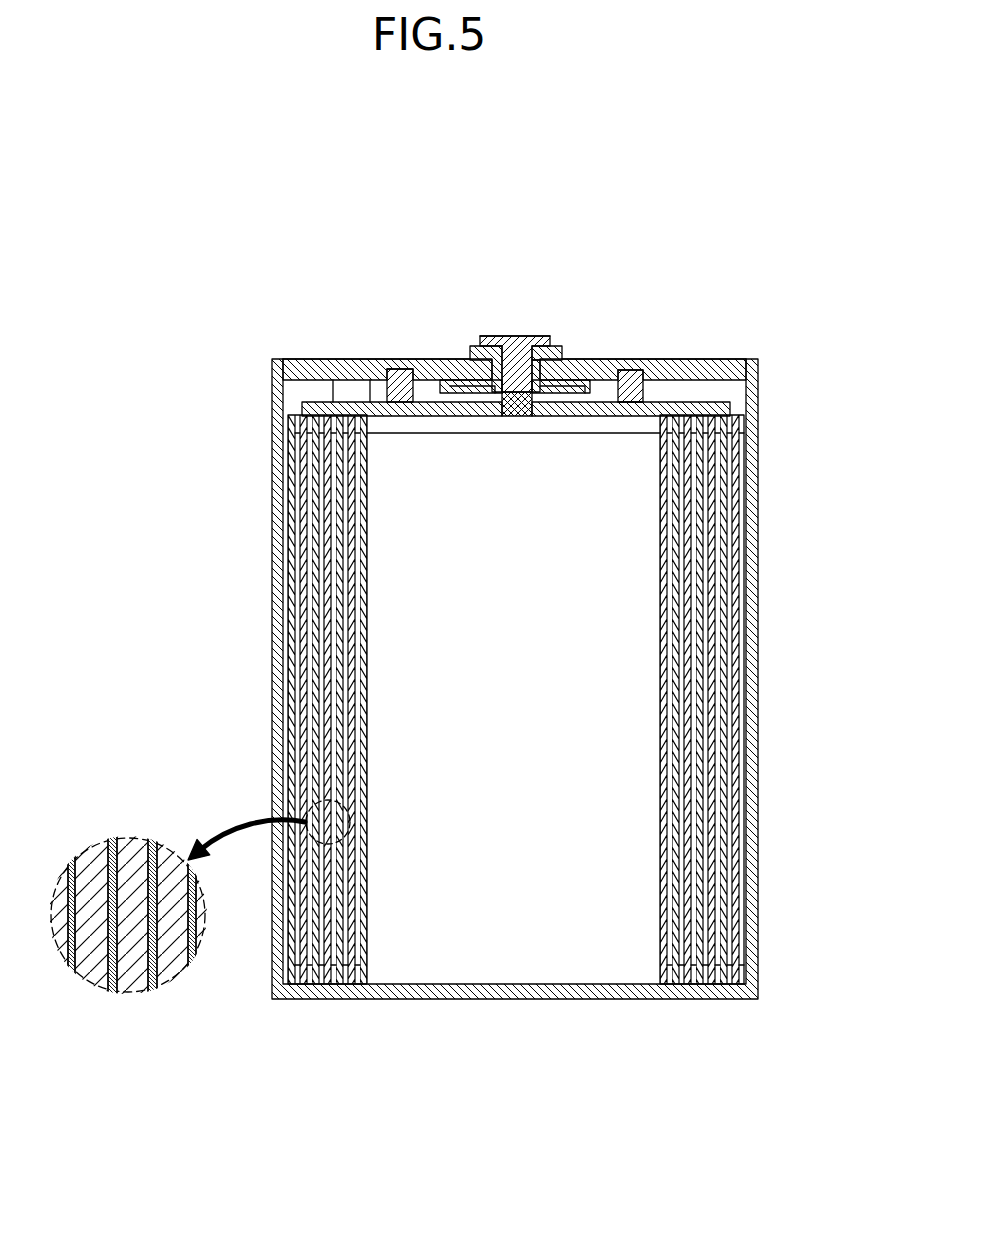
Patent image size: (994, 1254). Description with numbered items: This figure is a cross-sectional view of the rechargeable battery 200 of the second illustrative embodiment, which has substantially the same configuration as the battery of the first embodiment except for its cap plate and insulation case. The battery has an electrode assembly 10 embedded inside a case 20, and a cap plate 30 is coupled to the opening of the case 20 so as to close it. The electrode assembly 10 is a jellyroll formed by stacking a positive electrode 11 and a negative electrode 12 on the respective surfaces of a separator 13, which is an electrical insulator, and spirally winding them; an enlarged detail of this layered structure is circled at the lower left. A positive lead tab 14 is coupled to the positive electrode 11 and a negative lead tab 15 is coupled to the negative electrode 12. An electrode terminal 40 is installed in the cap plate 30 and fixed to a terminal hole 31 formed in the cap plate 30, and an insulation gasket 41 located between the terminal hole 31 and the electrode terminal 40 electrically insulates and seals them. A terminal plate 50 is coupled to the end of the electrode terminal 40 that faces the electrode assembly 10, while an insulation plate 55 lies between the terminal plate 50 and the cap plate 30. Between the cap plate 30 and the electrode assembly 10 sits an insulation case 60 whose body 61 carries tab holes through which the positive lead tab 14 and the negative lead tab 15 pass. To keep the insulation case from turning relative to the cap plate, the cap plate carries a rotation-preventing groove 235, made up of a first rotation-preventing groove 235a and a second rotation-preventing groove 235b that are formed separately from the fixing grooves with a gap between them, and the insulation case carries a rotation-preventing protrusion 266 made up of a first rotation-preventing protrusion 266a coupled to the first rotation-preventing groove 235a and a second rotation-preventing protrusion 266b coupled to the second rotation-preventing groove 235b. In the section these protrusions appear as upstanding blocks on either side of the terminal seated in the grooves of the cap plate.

The rechargeable battery 200 is at (710, 227).
The electrode assembly 10 is at (405, 594).
The positive electrode 11 is at (133, 977).
The negative electrode 12 is at (173, 963).
The separator 13 is at (155, 840).
The positive lead tab 14 is at (350, 385).
The negative lead tab 15 is at (515, 405).
The case 20 is at (753, 790).
The cap plate 30 is at (313, 370).
The terminal hole 31 is at (484, 338).
The electrode terminal 40 is at (514, 350).
The insulation gasket 41 is at (470, 355).
The terminal plate 50 is at (560, 346).
The insulation plate 55 is at (578, 382).
The insulation case 60 is at (598, 425).
The body 61 is at (632, 403).
The rotation-preventing groove 235 is at (148, 470).
The first rotation-preventing groove 235a is at (376, 362).
The second rotation-preventing groove 235b is at (661, 368).
The rotation-preventing protrusion 266 is at (148, 552).
The first rotation-preventing protrusion 266a is at (398, 404).
The second rotation-preventing protrusion 266b is at (630, 372).